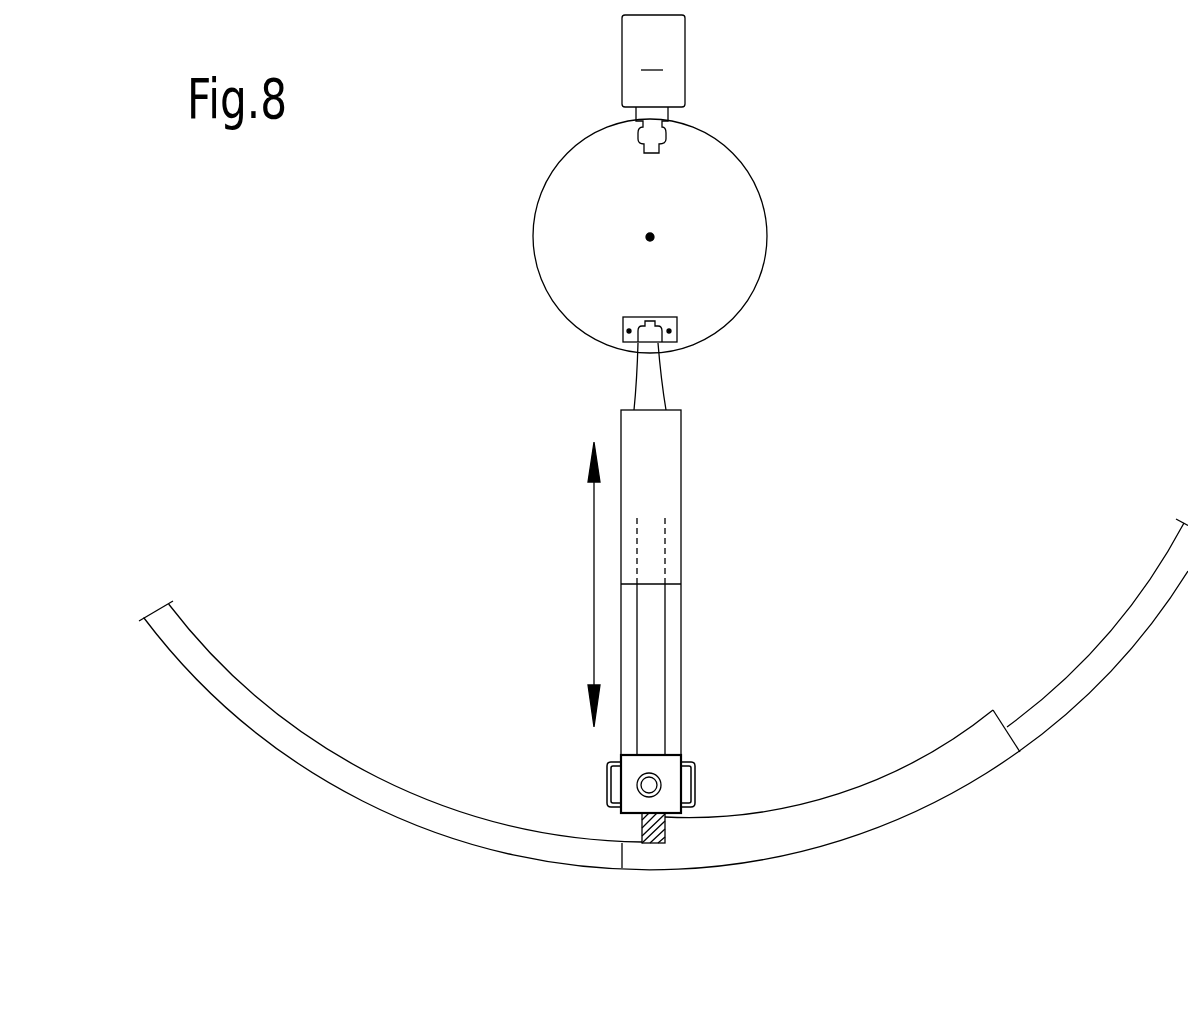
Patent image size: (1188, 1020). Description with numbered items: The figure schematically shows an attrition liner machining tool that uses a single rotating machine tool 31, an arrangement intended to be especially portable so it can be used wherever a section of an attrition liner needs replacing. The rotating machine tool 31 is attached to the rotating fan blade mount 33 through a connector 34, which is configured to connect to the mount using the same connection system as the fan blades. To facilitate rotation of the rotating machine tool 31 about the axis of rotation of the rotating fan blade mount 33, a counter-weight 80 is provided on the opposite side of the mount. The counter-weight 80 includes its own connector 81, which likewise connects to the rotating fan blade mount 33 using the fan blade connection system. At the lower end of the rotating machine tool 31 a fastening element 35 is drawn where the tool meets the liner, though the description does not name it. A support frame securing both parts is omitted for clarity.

The counter-weight 80 is at (633, 57).
The connector 81 is at (670, 131).
The rotating fan blade mount 33 is at (533, 213).
The connector 34 is at (643, 343).
The rotating machine tool 31 is at (683, 687).
The fastening bolt 35 is at (636, 830).